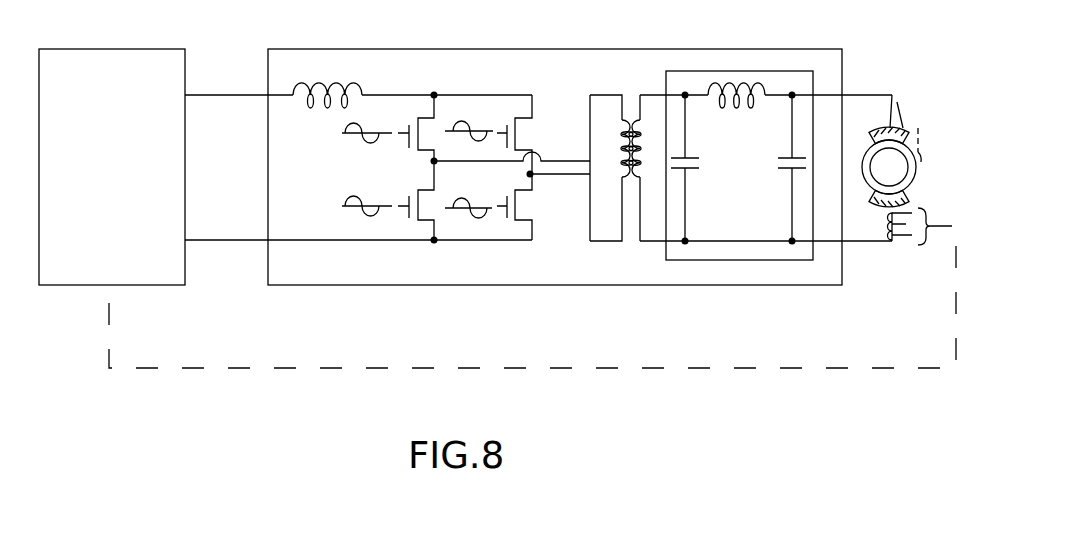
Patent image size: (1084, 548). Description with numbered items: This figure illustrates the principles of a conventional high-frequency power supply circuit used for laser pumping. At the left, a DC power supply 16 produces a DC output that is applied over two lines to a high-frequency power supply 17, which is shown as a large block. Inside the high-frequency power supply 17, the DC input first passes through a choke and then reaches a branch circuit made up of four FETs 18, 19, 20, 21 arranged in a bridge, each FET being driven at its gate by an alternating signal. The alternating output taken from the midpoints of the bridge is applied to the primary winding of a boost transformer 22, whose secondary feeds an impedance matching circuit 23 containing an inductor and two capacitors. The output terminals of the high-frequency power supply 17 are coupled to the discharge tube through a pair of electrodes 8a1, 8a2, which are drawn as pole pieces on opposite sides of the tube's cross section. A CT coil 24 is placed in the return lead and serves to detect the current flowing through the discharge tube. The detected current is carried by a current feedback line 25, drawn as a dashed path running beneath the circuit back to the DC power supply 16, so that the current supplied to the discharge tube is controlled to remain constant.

The DC power supply 16 is at (96, 49).
The high-frequency power supply 17 is at (530, 49).
The FET 18 is at (410, 124).
The FET 19 is at (410, 220).
The FET 20 is at (506, 124).
The FET 21 is at (507, 220).
The boost transformer 22 is at (633, 112).
The impedance matching circuit 23 is at (764, 71).
The electrode 8a1 is at (898, 122).
The electrode 8a2 is at (879, 204).
The CT coil 24 is at (908, 244).
The current feedback line 25 is at (435, 369).